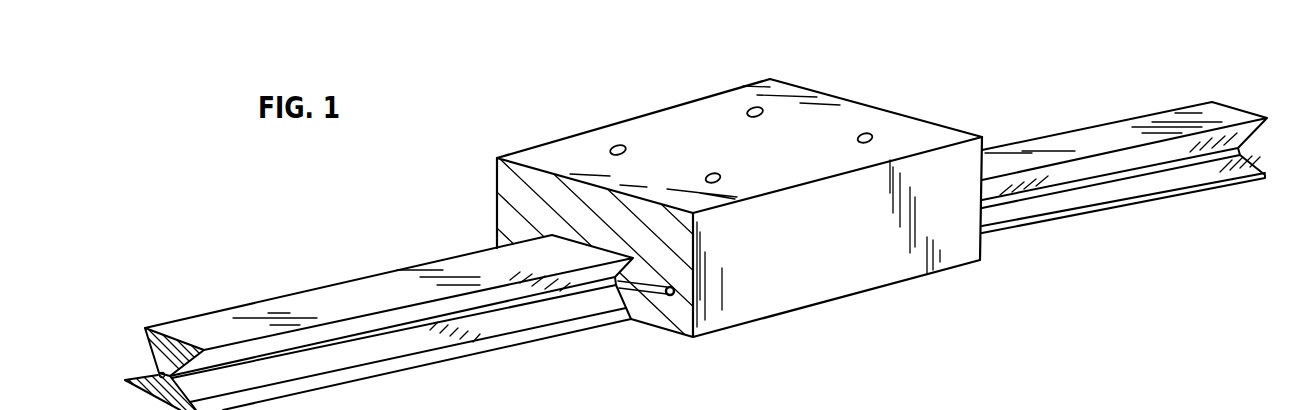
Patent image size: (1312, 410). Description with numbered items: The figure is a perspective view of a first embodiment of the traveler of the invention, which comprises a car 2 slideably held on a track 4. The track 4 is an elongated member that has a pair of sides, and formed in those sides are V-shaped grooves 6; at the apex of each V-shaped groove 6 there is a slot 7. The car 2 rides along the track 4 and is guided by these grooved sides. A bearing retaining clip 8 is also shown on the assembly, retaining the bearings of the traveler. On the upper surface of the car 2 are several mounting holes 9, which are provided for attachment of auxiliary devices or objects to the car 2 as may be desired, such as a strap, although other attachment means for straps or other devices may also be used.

The car 2 is at (597, 129).
The track 4 is at (438, 357).
The V-shaped grooves 6 is at (150, 346).
The slot 7 is at (147, 368).
The bearing retaining clip 8 is at (650, 297).
The mounting holes 9 is at (622, 146).